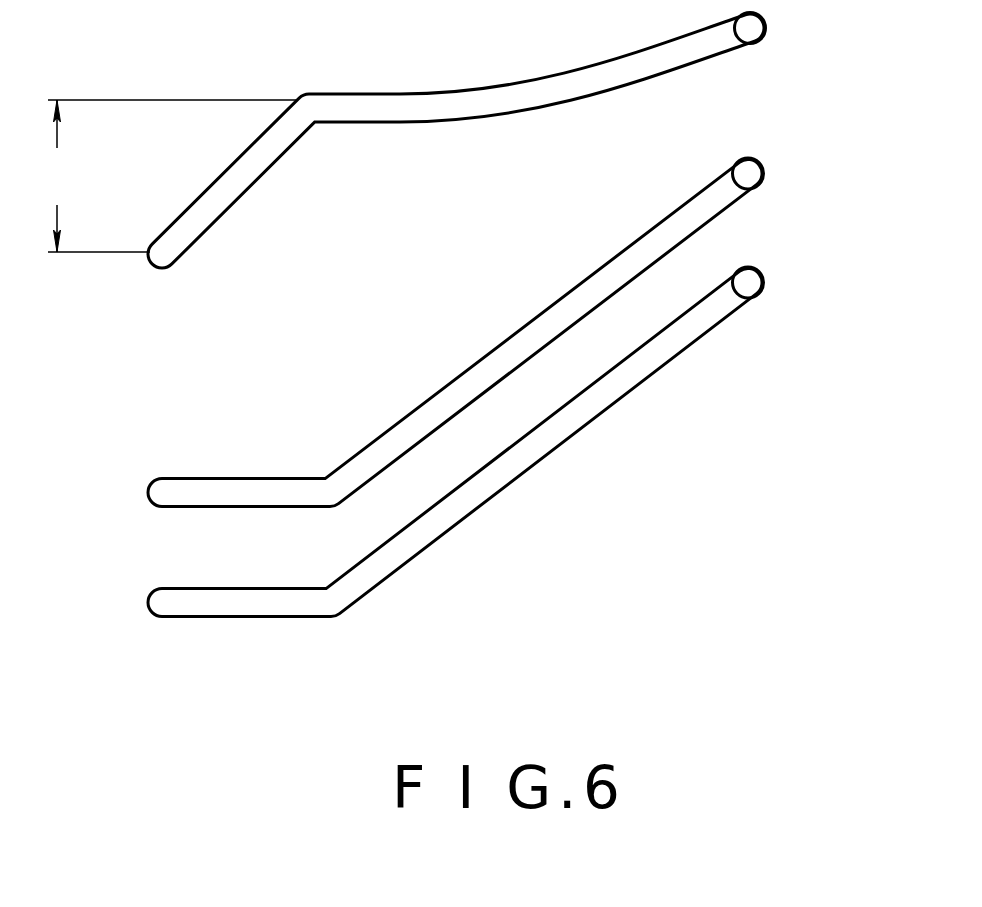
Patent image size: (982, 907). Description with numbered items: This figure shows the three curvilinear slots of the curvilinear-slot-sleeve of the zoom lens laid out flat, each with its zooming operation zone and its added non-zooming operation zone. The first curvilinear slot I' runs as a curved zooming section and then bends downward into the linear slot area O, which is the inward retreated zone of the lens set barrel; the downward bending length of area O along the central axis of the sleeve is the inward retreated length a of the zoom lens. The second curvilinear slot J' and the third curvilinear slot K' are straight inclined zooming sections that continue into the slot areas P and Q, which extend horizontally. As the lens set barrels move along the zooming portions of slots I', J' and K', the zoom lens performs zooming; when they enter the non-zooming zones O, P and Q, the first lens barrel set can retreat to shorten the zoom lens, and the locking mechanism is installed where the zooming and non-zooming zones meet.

The non-zooming operation zone O is at (249, 181).
The non-zooming operation zone P is at (178, 502).
The non-zooming operation zone Q is at (178, 612).
The first curvilinear slot I' is at (784, 28).
The second curvilinear slot J' is at (784, 172).
The third curvilinear slot K' is at (791, 284).
The inward retreated length a is at (170, 176).